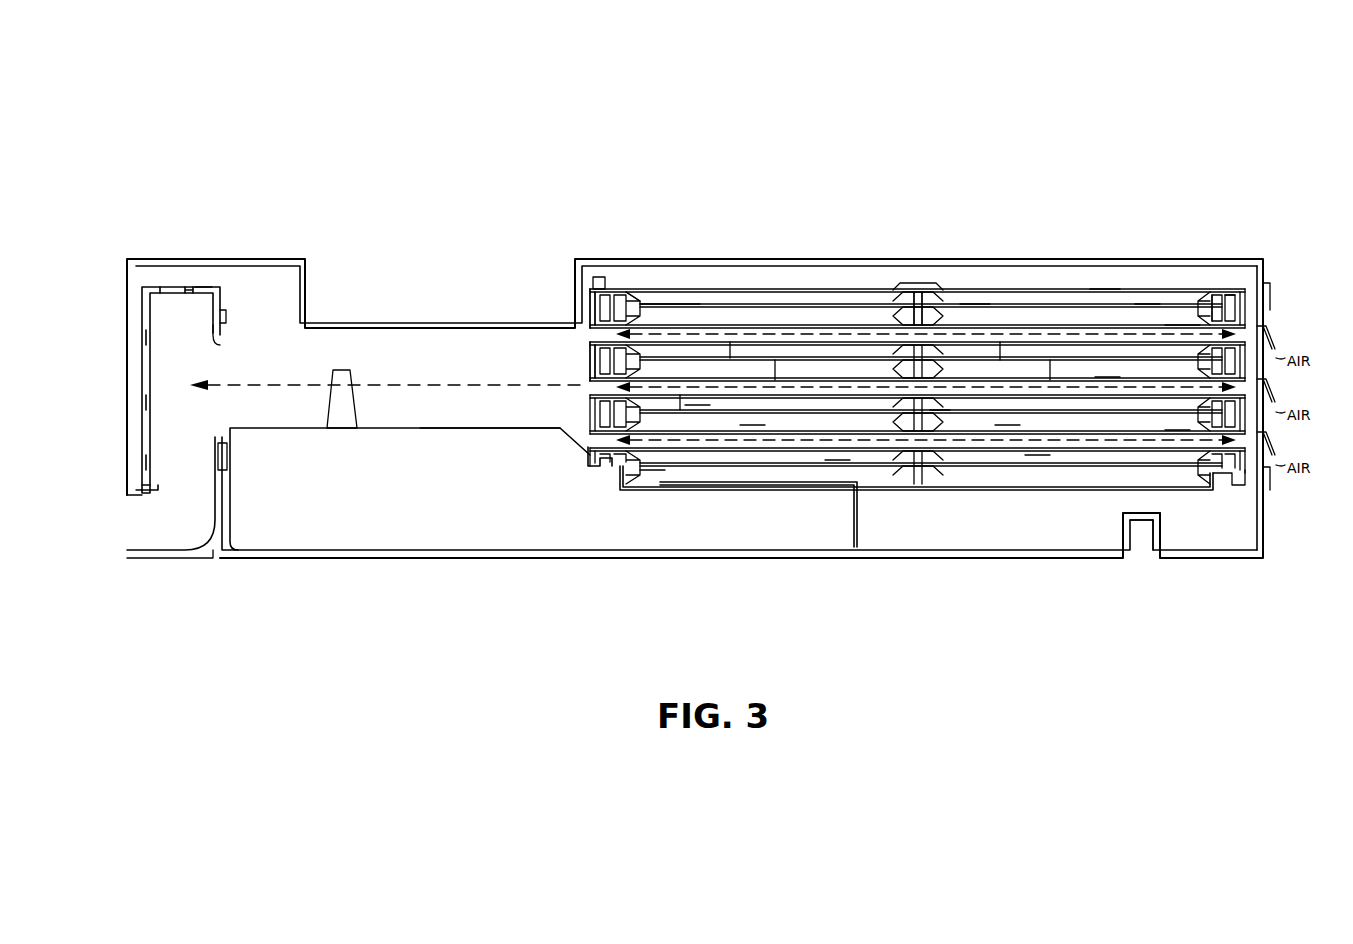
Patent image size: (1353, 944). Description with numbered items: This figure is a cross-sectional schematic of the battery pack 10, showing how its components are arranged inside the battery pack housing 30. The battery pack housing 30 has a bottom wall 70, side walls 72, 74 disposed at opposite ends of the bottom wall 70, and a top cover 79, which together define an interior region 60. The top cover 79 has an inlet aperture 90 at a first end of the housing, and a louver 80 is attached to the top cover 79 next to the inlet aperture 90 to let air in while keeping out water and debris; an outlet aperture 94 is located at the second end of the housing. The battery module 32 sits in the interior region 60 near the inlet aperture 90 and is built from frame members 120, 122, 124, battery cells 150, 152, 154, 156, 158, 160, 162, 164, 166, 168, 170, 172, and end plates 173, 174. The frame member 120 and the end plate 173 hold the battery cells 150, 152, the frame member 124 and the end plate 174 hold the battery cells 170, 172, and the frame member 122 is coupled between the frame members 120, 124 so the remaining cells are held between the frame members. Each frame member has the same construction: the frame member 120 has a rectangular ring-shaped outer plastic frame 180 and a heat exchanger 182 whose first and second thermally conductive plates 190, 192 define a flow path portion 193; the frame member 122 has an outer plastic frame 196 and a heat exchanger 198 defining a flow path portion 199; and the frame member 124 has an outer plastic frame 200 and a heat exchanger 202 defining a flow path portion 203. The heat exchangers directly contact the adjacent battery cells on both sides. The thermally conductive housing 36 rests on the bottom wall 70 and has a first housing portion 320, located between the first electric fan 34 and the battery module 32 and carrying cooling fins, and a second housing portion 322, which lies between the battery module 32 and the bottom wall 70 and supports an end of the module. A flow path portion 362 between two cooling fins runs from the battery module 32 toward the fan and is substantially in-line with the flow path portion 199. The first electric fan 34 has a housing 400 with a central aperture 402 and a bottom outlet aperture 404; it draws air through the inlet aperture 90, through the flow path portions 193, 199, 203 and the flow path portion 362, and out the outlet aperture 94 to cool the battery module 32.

The battery pack 10 is at (1024, 124).
The battery pack housing 30 is at (918, 288).
The battery module 32 is at (938, 300).
The first electric fan 34 is at (198, 278).
The thermally conductive housing 36 is at (470, 436).
The interior region 60 is at (870, 281).
The bottom wall 70 is at (920, 558).
The side wall 72 is at (1266, 522).
The side wall 74 is at (130, 392).
The top cover 79 is at (830, 259).
The louver 80 is at (1268, 295).
The inlet aperture 90 is at (1268, 462).
The outlet aperture 94 is at (142, 497).
The frame member 120 is at (590, 300).
The frame member 122 is at (592, 363).
The frame member 124 is at (593, 467).
The battery cell 150 is at (645, 300).
The battery cell 152 is at (975, 320).
The battery cell 154 is at (738, 355).
The battery cell 156 is at (1015, 350).
The battery cell 158 is at (782, 375).
The battery cell 160 is at (1058, 370).
The battery cell 162 is at (695, 407).
The battery cell 164 is at (940, 412).
The battery cell 166 is at (750, 427).
The battery cell 168 is at (1005, 427).
The battery cell 170 is at (835, 462).
The battery cell 172 is at (1035, 457).
The end plate 173 is at (1100, 292).
The end plate 174 is at (1080, 556).
The outer plastic frame 180 is at (1240, 300).
The heat exchanger 182 is at (1215, 320).
The first thermally conductive plate 190 is at (1145, 320).
The second thermally conductive plate 192 is at (1170, 322).
The flow path portion 193 is at (662, 300).
The outer plastic frame 196 is at (1175, 432).
The heat exchanger 198 is at (1105, 380).
The flow path portion 199 is at (695, 390).
The outer plastic frame 200 is at (1232, 478).
The heat exchanger 202 is at (1162, 500).
The flow path portion 203 is at (650, 472).
The first housing portion 320 is at (390, 437).
The second housing portion 322 is at (805, 532).
The flow path portion 362 is at (468, 382).
The housing 400 is at (160, 289).
The central aperture 402 is at (222, 345).
The bottom outlet aperture 404 is at (153, 483).